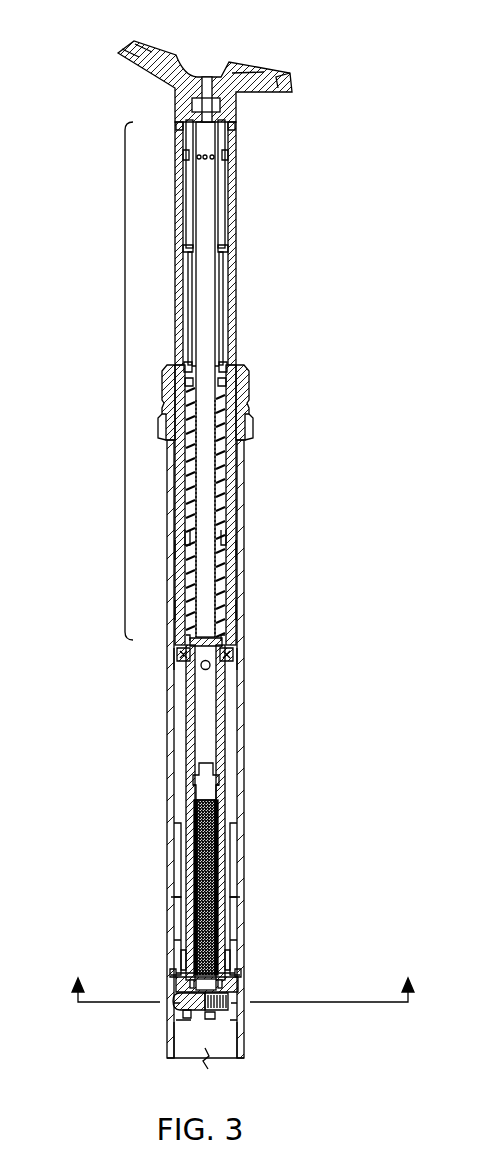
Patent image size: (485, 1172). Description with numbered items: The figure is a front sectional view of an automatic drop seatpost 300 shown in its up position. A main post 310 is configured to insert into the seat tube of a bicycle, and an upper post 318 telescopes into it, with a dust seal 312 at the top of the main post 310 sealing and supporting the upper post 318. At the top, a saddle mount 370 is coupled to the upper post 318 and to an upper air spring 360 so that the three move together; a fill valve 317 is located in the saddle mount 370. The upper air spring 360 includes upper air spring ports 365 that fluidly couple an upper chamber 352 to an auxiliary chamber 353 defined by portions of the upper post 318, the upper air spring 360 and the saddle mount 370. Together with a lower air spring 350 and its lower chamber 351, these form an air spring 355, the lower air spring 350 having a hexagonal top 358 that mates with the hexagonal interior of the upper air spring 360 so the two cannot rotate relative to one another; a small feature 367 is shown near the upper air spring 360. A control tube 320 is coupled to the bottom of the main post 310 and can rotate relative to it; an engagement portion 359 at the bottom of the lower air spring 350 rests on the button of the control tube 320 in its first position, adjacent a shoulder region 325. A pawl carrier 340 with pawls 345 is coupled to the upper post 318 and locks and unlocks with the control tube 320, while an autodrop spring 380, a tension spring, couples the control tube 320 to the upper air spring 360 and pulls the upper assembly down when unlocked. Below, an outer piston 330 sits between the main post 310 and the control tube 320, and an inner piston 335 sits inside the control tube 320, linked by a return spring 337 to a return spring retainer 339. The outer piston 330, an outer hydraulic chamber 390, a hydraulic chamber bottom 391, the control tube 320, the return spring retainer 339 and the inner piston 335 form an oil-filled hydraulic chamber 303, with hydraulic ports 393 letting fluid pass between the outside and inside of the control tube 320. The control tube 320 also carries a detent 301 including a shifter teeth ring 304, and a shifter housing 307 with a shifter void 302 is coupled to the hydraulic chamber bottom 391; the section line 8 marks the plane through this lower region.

The automatic drop seatpost 300 is at (384, 57).
The saddle mount 370 is at (237, 82).
The fill valve 317 is at (208, 78).
The upper post 318 is at (233, 140).
The upper air spring 360 is at (223, 207).
The sleeve lug 367 is at (226, 176).
The upper air spring ports 365 is at (211, 157).
The auxiliary chamber 353 is at (186, 224).
The upper chamber 352 is at (206, 263).
The air spring 355 is at (125, 382).
The hexagonal top 358 is at (238, 366).
The dust seal 312 is at (249, 413).
The main post 310 is at (168, 498).
The pawl carrier 340 is at (178, 575).
The autodrop spring 380 is at (232, 470).
The lower chamber 351 is at (205, 473).
The lower air spring 350 is at (228, 565).
The pawls 345 is at (233, 651).
The engagement portion 359 is at (212, 668).
The shoulder 325 is at (185, 665).
The control tube 320 is at (187, 712).
The inner piston 335 is at (200, 770).
The return spring 337 is at (195, 826).
The outer piston 330 is at (229, 843).
The outer hydraulic chamber 390 is at (172, 940).
The hydraulic chamber 303 is at (174, 952).
The hydraulic ports 393 is at (170, 973).
The hydraulic chamber bottom 391 is at (240, 985).
The return spring retainer 339 is at (236, 998).
The shifter teeth ring 304 is at (186, 1016).
The detent 301 is at (173, 1004).
The shifter housing 307 is at (183, 1018).
The shifter void 302 is at (190, 1042).
The section line 8- 8 is at (243, 995).